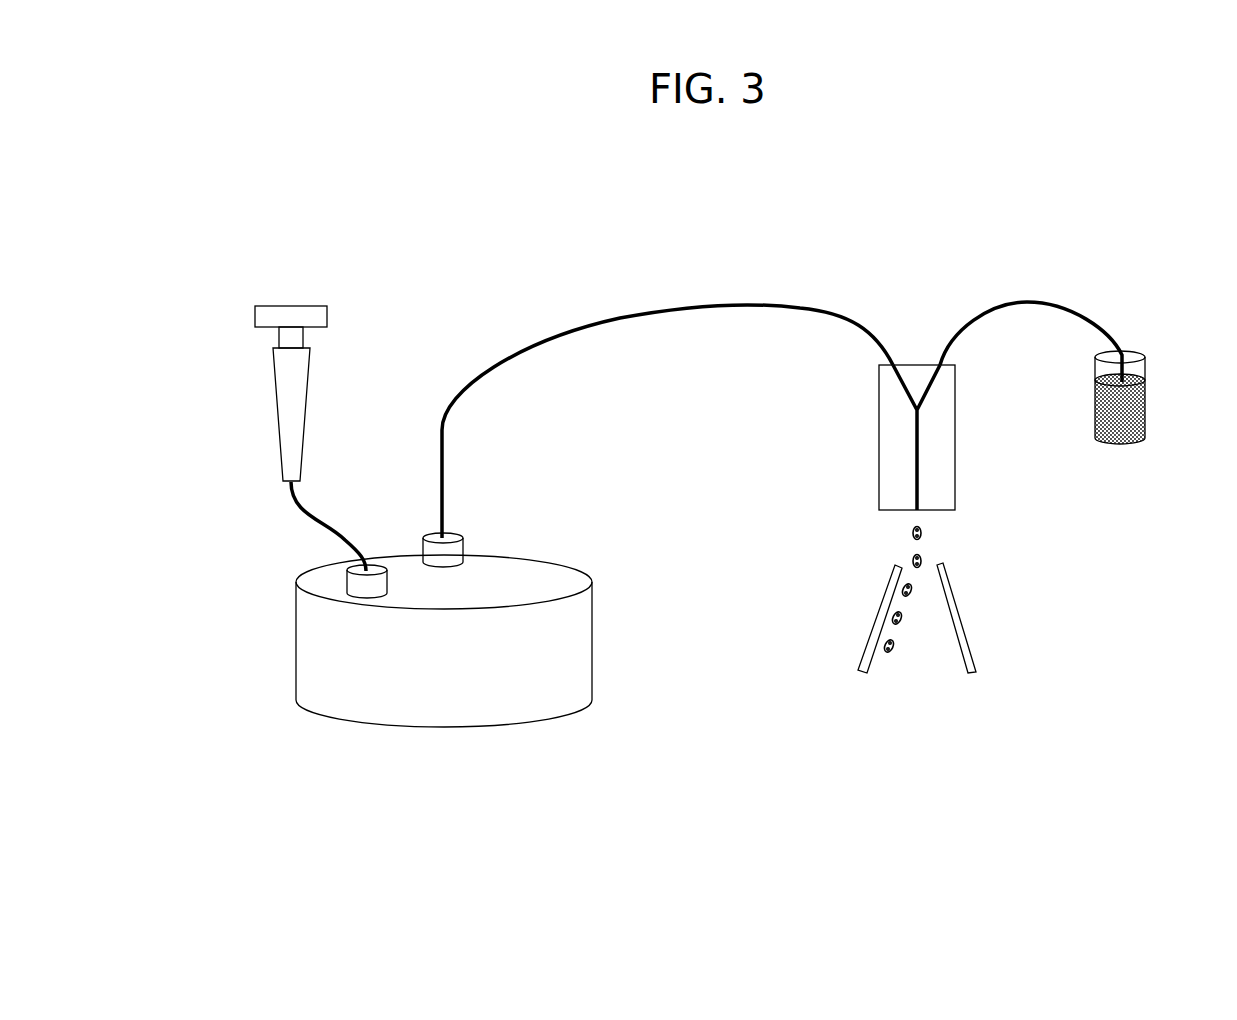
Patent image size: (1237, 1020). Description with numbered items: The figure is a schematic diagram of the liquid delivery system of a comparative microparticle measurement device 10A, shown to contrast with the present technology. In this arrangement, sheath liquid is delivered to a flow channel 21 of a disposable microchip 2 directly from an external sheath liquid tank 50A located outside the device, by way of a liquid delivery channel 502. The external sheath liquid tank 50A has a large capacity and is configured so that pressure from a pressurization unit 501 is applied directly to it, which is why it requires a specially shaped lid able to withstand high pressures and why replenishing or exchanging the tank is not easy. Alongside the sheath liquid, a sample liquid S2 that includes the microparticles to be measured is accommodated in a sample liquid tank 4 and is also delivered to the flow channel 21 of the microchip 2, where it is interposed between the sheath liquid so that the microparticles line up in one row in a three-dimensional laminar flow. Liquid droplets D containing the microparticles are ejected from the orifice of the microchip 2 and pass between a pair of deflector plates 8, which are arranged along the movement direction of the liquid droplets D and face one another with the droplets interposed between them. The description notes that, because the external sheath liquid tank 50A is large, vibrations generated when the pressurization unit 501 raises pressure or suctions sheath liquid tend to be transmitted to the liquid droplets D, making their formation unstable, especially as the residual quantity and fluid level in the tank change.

The microparticle measurement device 10A is at (605, 254).
The pressurization unit 501 is at (292, 305).
The external sheath liquid tank 50A is at (447, 692).
The liquid delivery channel 502 is at (769, 302).
The microchip 2 is at (879, 437).
The flow channel 21 is at (917, 455).
The sample liquid tank 4 is at (1135, 355).
The sample liquid S2 is at (1113, 435).
The deflector plates 8 is at (965, 630).
The liquid droplets D is at (895, 652).